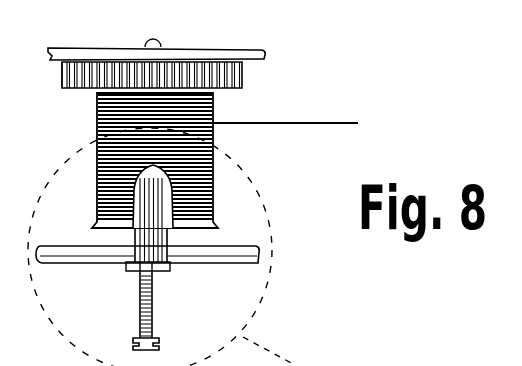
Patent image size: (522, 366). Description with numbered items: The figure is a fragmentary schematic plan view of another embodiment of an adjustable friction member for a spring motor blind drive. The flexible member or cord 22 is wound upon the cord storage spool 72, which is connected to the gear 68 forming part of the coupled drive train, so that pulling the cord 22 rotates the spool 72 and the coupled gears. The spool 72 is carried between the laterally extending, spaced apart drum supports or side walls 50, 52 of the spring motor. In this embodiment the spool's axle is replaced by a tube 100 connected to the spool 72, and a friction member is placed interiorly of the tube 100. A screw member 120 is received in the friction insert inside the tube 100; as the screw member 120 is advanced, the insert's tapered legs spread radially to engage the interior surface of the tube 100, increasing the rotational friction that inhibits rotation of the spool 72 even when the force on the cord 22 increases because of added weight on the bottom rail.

The flexible member or cord 22 is at (283, 122).
The side wall 50 is at (228, 52).
The side wall 52 is at (90, 262).
The gear 68 is at (75, 70).
The cord storage spool 72 is at (218, 137).
The tube 100 is at (165, 243).
The screw member 120 is at (152, 304).